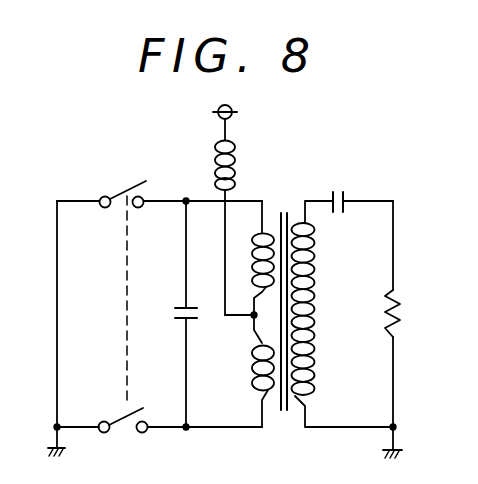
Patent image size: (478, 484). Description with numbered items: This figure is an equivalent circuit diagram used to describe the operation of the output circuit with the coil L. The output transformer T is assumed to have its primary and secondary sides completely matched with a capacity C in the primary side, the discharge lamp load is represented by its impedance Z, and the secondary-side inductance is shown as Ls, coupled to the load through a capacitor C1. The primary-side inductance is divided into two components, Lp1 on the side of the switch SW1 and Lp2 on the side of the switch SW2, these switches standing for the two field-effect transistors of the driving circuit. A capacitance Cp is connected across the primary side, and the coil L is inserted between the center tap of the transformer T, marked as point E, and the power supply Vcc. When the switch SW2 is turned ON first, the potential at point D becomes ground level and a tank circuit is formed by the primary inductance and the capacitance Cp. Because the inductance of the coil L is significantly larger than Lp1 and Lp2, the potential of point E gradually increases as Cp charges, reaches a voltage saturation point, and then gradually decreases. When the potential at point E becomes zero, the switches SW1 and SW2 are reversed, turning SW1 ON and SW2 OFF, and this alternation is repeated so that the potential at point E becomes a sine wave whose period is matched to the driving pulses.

The power supply Vcc is at (251, 118).
The coil L is at (234, 171).
The switch SW1 is at (127, 280).
The switch SW2 is at (159, 438).
The capacity in primary side C is at (186, 198).
The point D is at (186, 430).
The point E is at (250, 320).
The capacitance Cp is at (174, 314).
The primary inductance component Lp1 is at (250, 258).
The primary inductance component Lp2 is at (240, 371).
The output transformer T is at (284, 200).
The secondary side inductance Ls is at (342, 314).
The capacitor C1 is at (361, 185).
The impedance of discharge lamp load Z is at (406, 325).